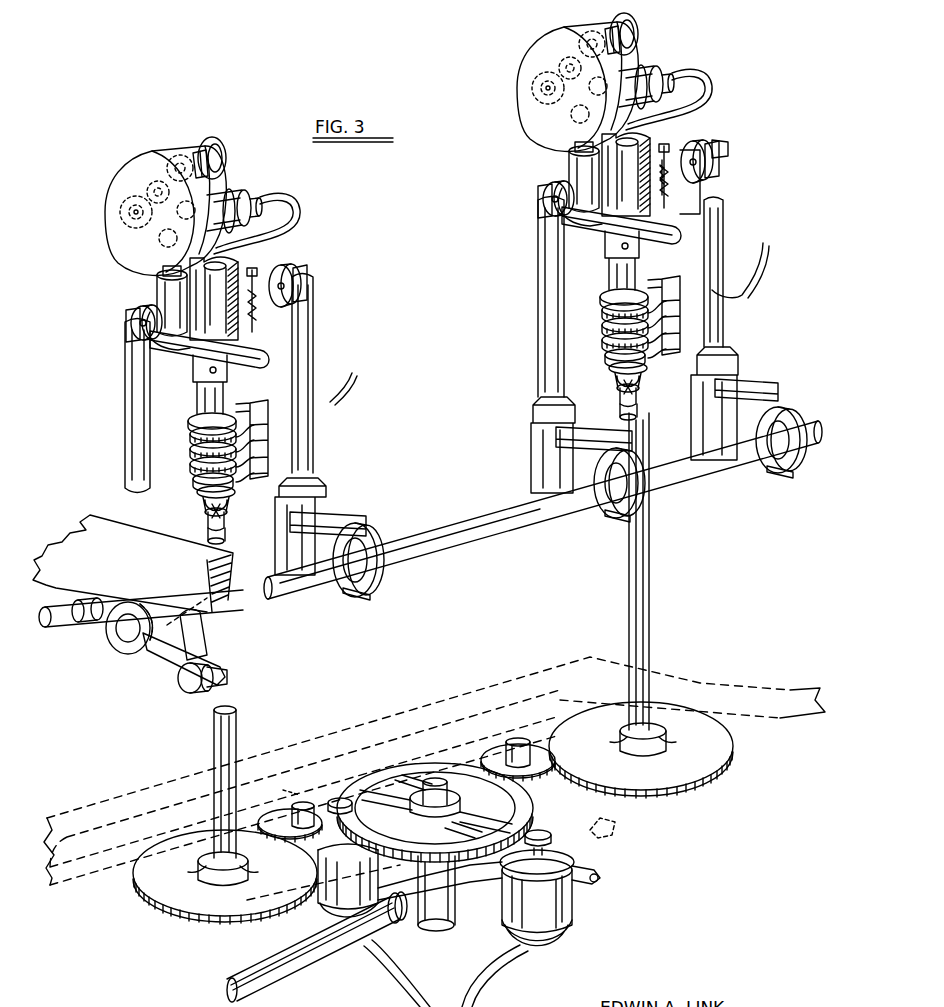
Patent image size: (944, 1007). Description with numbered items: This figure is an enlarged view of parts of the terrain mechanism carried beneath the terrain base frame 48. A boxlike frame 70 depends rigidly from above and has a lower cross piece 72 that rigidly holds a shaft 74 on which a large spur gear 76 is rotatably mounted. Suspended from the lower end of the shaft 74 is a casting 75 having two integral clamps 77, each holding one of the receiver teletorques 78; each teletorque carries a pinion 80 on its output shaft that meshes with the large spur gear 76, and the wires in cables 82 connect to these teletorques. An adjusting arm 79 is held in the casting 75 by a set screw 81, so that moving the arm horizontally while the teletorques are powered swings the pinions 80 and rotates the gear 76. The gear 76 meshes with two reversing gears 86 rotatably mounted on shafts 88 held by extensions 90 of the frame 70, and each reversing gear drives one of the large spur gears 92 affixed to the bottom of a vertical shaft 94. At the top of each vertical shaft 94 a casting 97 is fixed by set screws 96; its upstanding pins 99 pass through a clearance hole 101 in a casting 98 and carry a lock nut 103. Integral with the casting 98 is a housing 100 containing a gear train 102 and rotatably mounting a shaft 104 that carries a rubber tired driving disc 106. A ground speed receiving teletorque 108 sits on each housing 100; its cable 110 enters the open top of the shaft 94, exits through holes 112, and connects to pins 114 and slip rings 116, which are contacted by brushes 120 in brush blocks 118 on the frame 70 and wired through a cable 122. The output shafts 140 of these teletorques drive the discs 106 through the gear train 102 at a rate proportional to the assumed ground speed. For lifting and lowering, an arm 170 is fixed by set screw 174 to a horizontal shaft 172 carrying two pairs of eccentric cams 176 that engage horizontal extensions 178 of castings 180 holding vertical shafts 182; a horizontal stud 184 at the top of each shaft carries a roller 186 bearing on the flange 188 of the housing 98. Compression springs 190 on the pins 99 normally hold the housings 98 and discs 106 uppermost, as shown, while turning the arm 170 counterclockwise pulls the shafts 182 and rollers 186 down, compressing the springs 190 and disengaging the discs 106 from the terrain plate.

The terrain base frame 48 is at (70, 543).
The boxlike frame 70 is at (386, 720).
The lower cross piece 72 is at (622, 825).
The shaft 74 is at (438, 778).
The casting 75 is at (460, 900).
The large spur gear 76 is at (527, 802).
The clamps 77 is at (583, 883).
The receiver teletorques 78 is at (560, 905).
The adjusting arm 79 is at (252, 980).
The pinion 80 is at (547, 845).
The set screw 81 is at (405, 905).
The cables 82 is at (470, 975).
The reversing gears 86 is at (546, 756).
The shafts 88 is at (516, 740).
The extensions 90 is at (283, 790).
The large spur gears 92 is at (158, 882).
The vertical shafts 94 is at (232, 530).
The set screws 96 is at (623, 247).
The casting 97 is at (262, 365).
The casting 98 is at (158, 290).
The upstanding pins 99 is at (668, 152).
The housing 100 is at (141, 165).
The clearance hole 101 is at (728, 148).
The gear train 102 is at (125, 200).
The lock nut 103 is at (158, 280).
The shaft 104 is at (194, 152).
The rubber tired driving disc 106 is at (218, 145).
The teletorque 108 is at (238, 198).
The cable 110 is at (292, 212).
The holes 112 is at (641, 395).
The pins 114 is at (197, 497).
The slip rings 116 is at (190, 440).
The brush blocks 118 is at (270, 462).
The brushes 120 is at (259, 480).
The cable 122 is at (352, 387).
The output shafts 140 is at (150, 254).
The arm 170 is at (165, 656).
The horizontal shaft 172 is at (432, 526).
The set screw 174 is at (118, 644).
The eccentric cams 176 is at (342, 582).
The horizontal extensions 178 is at (352, 520).
The castings 180 is at (288, 530).
The vertical shafts 182 is at (302, 368).
The horizontal stud 184 is at (306, 276).
The roller 186 is at (283, 270).
The flange 188 is at (705, 205).
The compression spring 190 is at (683, 186).